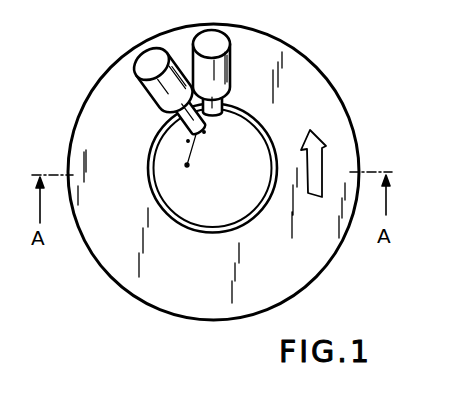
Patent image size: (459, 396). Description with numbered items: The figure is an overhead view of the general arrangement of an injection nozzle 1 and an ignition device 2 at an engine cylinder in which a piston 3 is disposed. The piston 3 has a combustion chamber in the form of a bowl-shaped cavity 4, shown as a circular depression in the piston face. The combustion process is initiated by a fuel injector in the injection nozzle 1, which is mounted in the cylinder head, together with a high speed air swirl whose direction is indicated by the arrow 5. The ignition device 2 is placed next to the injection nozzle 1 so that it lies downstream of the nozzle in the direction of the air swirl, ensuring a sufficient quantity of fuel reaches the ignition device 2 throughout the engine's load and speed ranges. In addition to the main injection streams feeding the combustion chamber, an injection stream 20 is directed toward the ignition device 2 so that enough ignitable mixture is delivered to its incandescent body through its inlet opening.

The injection nozzle 1 is at (222, 80).
The ignition device 2 is at (156, 98).
The piston 3 is at (313, 257).
The bowl-shaped cavity 4 is at (246, 132).
The arrow 5 is at (318, 156).
The injection stream 20 is at (211, 114).